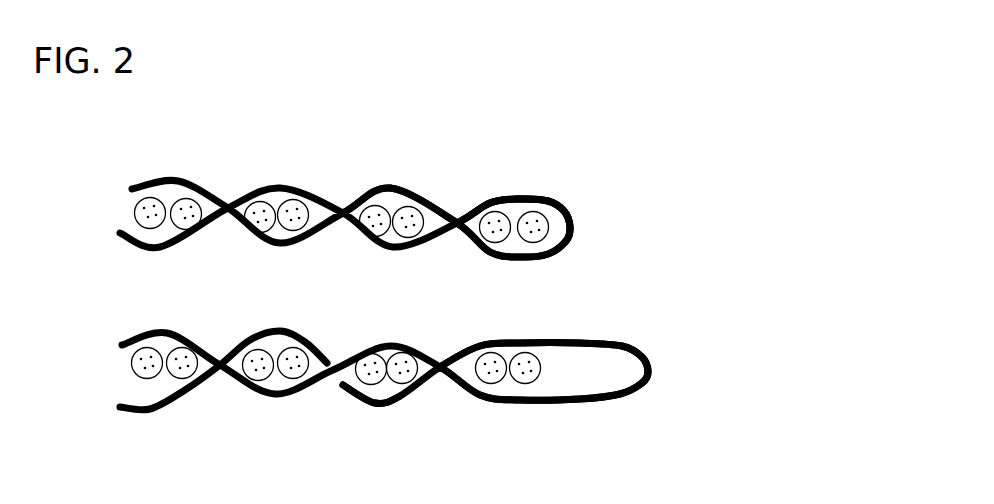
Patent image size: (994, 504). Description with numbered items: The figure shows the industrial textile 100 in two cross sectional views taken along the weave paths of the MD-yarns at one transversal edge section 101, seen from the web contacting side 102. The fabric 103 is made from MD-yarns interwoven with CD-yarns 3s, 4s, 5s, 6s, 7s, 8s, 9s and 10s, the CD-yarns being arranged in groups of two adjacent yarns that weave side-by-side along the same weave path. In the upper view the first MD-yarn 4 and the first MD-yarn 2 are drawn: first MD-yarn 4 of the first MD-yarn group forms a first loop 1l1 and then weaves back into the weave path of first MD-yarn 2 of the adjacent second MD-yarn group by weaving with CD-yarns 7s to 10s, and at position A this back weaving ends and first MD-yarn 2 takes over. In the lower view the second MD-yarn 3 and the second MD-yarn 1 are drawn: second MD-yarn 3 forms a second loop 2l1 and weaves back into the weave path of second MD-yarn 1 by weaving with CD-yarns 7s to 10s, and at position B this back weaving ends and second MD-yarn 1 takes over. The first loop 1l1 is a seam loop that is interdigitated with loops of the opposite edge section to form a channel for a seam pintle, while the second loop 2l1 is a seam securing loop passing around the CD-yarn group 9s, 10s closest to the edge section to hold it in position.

The second MD-yarn 1 is at (169, 178).
The first MD-yarn 2 is at (140, 413).
The second MD-yarn 3 is at (558, 196).
The first MD-yarn 4 is at (573, 403).
The position A is at (345, 210).
The position B is at (337, 387).
The web contacting side 102 is at (436, 172).
The industrial textile 100 is at (552, 140).
The transversal edge section 101 is at (580, 108).
The fabric 103 is at (548, 152).
The second loop 2l1 is at (586, 228).
The first loop 1l1 is at (666, 371).
The CD-yarn 3s is at (143, 227).
The CD-yarn 4s is at (182, 228).
The CD-yarn 5s is at (246, 233).
The CD-yarn 6s is at (290, 229).
The CD-yarn 7s is at (362, 245).
The CD-yarn 8s is at (402, 238).
The CD-yarn 9s is at (483, 244).
The CD-yarn 10s is at (543, 240).